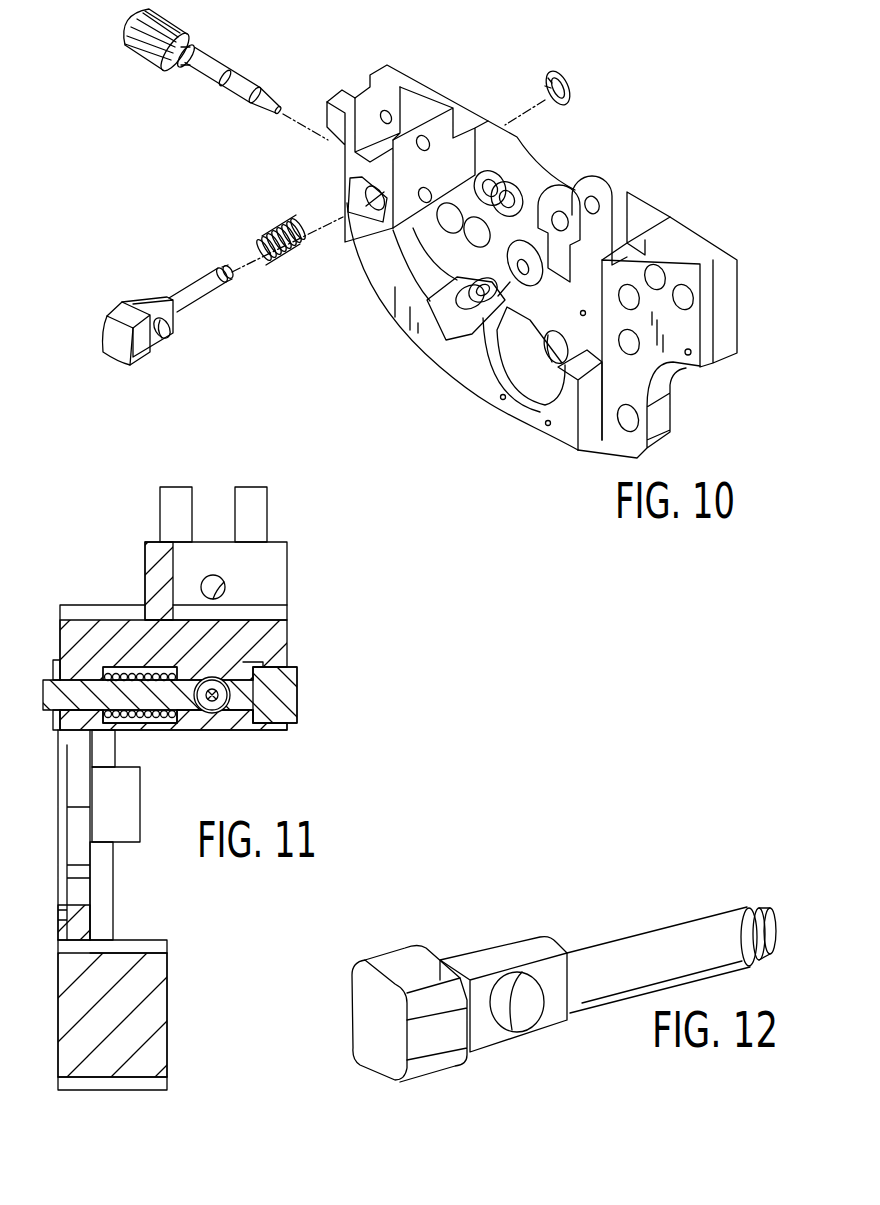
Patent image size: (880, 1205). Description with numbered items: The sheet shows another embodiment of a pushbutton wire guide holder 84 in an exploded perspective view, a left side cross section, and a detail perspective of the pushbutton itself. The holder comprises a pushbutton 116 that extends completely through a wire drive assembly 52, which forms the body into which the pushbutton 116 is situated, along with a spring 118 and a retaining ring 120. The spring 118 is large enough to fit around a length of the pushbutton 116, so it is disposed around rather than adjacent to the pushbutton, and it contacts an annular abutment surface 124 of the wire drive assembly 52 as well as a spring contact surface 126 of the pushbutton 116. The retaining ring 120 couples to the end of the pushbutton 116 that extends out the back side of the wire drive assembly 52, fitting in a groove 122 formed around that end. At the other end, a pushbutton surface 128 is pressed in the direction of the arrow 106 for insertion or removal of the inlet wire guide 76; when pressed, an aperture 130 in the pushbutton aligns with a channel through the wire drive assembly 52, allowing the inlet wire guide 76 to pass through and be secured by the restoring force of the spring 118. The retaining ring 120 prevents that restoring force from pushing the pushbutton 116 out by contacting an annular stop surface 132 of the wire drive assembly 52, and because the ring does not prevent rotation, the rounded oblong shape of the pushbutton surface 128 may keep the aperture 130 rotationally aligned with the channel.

In FIG. 10, the wire drive assembly 52 is at (430, 97).
In FIG. 11, the wire drive assembly 52 is at (277, 560).
In FIG. 10, the inlet wire guide 76 is at (238, 72).
In FIG. 10, the pushbutton wire guide holder 84 is at (276, 171).
In FIG. 11, the pushbutton wire guide holder 84 is at (371, 555).
In FIG. 11, the arrow 106 is at (313, 694).
In FIG. 10, the pushbutton 116 is at (188, 292).
In FIG. 11, the pushbutton 116 is at (273, 663).
In FIG. 12, the pushbutton 116 is at (554, 937).
In FIG. 10, the spring 118 is at (292, 262).
In FIG. 11, the spring 118 is at (147, 673).
In FIG. 10, the retaining ring 120 is at (568, 75).
In FIG. 11, the retaining ring 120 is at (55, 673).
In FIG. 11, the groove 122 is at (55, 713).
In FIG. 12, the groove 122 is at (763, 923).
In FIG. 11, the annular abutment surface 124 is at (110, 673).
In FIG. 11, the spring contact surface 126 is at (173, 713).
In FIG. 11, the pushbutton surface 128 is at (300, 718).
In FIG. 12, the pushbutton surface 128 is at (353, 980).
In FIG. 11, the aperture 130 is at (222, 710).
In FIG. 12, the aperture 130 is at (525, 1013).
In FIG. 11, the annular stop surface 132 is at (67, 743).